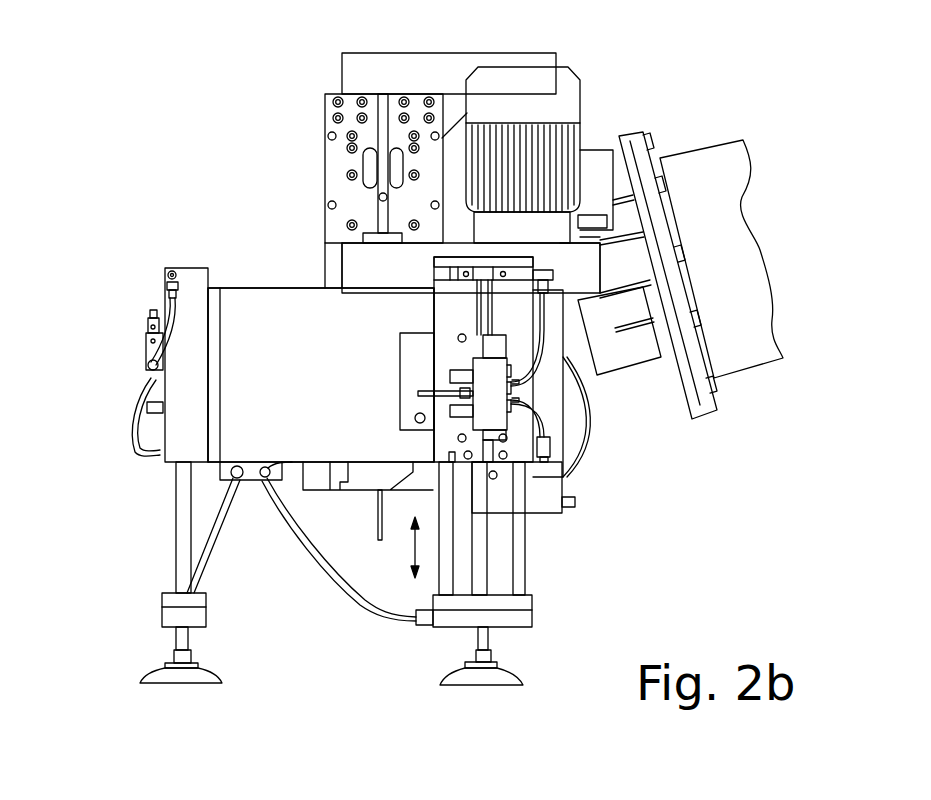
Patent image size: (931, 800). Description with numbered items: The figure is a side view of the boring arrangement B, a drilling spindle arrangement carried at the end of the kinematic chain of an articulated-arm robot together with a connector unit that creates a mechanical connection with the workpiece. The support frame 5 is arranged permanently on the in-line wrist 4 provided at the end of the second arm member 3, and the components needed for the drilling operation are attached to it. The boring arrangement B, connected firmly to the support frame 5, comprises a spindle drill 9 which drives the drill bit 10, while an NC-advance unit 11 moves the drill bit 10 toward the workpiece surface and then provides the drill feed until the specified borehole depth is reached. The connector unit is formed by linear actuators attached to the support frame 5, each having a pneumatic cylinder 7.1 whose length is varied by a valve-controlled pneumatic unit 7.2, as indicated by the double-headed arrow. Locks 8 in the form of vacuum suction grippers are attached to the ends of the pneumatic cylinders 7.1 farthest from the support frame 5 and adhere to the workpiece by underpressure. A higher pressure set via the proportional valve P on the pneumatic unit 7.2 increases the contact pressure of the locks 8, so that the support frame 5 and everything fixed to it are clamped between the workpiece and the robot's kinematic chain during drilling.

The boring arrangement B is at (228, 145).
The second arm member 3 is at (760, 315).
The in-line wrist 4 is at (641, 355).
The support frame 5 is at (357, 396).
The pneumatic cylinder 7.1 is at (158, 538).
The pneumatic unit 7.2 is at (140, 373).
The lock 8 is at (200, 677).
The spindle drill 9 is at (557, 165).
The drill bit 10 is at (365, 545).
The NC-advance unit 11 is at (387, 106).
The proportional valve P is at (497, 450).